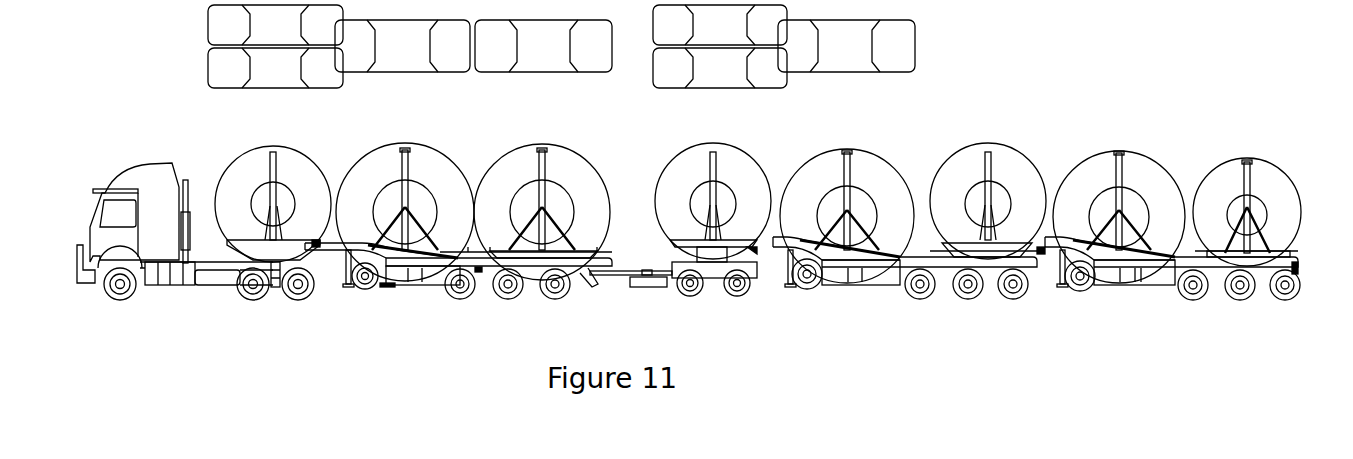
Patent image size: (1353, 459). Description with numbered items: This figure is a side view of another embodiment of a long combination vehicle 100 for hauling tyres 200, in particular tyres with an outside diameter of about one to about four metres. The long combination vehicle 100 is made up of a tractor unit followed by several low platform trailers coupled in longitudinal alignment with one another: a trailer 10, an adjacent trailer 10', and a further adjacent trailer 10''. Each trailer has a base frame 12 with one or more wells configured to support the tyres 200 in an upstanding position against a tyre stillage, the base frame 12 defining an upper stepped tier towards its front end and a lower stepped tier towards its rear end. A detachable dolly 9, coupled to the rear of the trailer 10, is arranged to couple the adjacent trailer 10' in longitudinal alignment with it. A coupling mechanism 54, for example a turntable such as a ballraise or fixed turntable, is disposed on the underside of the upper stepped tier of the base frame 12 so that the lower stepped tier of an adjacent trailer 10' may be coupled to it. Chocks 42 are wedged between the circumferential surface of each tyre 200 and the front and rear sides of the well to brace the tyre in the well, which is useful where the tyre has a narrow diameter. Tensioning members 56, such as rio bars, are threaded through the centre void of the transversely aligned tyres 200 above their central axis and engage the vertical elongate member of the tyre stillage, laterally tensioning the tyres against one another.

The long combination vehicle 100 is at (133, 155).
The tyre 200 is at (293, 167).
The tensioning member 56 is at (272, 201).
The coupling mechanism 54 is at (279, 290).
The chock 42 is at (315, 250).
The base frame 12 is at (430, 288).
The detachable dolly 9 is at (713, 297).
The trailer 10 is at (451, 311).
The adjacent trailer 10' is at (902, 307).
The further adjacent trailer 10'' is at (1172, 300).